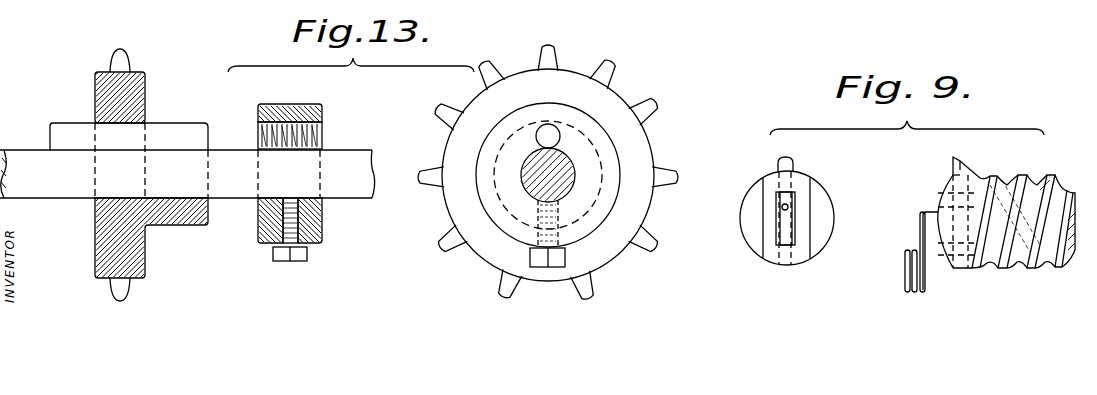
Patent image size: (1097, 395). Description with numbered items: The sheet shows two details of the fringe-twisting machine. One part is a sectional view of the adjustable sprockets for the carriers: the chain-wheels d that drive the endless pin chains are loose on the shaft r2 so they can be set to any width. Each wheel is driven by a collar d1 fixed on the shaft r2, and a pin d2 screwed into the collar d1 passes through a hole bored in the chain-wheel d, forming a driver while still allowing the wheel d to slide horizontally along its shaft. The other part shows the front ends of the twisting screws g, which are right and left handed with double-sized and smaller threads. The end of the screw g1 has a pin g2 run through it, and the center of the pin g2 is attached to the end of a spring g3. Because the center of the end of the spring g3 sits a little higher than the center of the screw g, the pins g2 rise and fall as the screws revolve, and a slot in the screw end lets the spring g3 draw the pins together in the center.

In FIG. 13, the chain-wheel d is at (106, 92).
In FIG. 13, the collar d1 is at (322, 109).
In FIG. 13, the pin d2 is at (144, 159).
In FIG. 13, the shaft r2 is at (293, 200).
In FIG. 9, the screw g is at (1062, 252).
In FIG. 9, the end of the screw g1 is at (778, 207).
In FIG. 9, the pin g2 is at (794, 161).
In FIG. 9, the spring g3 is at (778, 233).